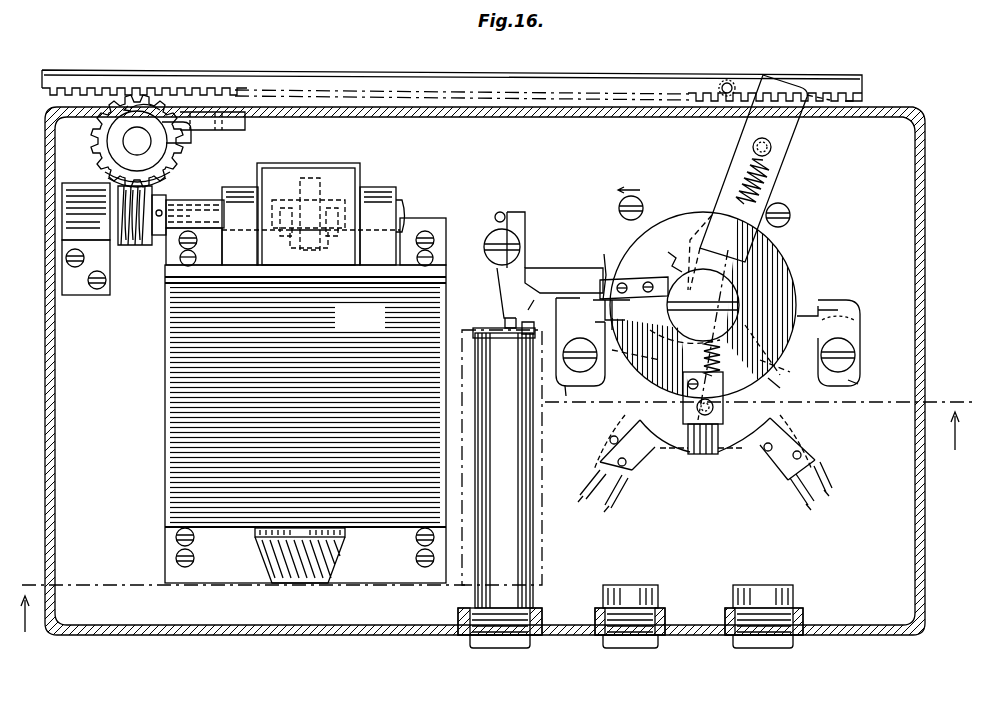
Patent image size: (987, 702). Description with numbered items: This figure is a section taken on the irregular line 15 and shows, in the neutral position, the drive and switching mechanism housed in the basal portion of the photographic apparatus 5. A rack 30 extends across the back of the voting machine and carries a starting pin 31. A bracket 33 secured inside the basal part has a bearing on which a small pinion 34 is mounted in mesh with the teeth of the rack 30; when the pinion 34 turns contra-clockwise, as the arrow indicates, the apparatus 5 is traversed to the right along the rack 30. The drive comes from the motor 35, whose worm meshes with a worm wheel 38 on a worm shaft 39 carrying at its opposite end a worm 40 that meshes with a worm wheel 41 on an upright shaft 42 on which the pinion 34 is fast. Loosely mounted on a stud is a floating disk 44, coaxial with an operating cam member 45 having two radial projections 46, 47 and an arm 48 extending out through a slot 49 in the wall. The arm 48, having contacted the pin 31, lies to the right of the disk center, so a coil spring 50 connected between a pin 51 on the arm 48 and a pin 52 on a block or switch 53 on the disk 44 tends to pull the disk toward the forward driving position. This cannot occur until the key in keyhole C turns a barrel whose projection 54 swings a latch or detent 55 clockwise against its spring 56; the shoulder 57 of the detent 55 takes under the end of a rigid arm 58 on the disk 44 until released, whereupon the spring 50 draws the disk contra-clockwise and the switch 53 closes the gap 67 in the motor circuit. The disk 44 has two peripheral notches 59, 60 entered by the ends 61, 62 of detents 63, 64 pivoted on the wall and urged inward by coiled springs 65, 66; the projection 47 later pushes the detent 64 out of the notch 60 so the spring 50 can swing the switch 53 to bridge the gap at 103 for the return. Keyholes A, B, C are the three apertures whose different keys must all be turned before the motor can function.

The photographic apparatus 5 is at (46, 374).
The Fig. 15 section reference 15 is at (492, 534).
The rack 30 is at (196, 72).
The starting pin 31 is at (728, 82).
The bracket 33 is at (242, 124).
The pinion 34 is at (170, 162).
The motor 35 is at (305, 424).
The worm wheel 38 is at (312, 178).
The worm shaft 39 is at (405, 212).
The worm 40 is at (134, 243).
The worm wheel 41 is at (95, 184).
The upright shaft 42 is at (150, 138).
The floating disk 44 is at (775, 262).
The operating cam member 45 is at (669, 252).
The radial projection 46 is at (646, 274).
The radial projection 47 is at (784, 389).
The arm 48 is at (724, 160).
The slot 49 is at (667, 118).
The coil spring 50 is at (758, 184).
The pin 51 is at (772, 148).
The pin 52 is at (703, 452).
The block or switch 53 is at (722, 392).
The projection 54 is at (520, 334).
The latch or detent 55 is at (498, 306).
The spring 56 is at (490, 240).
The shoulder 57 is at (536, 314).
The rigid arm 58 is at (540, 278).
The peripheral notch 59 is at (584, 345).
The peripheral notch 60 is at (835, 369).
The detent end 61 is at (606, 265).
The detent end 62 is at (806, 312).
The detent 63 is at (580, 300).
The detent 64 is at (832, 322).
The coiled spring 65 is at (561, 401).
The coiled spring 66 is at (865, 384).
The gap 67 is at (790, 446).
The gap 103 is at (652, 458).
The keyhole A is at (764, 630).
The keyhole B is at (630, 630).
The keyhole C is at (498, 666).